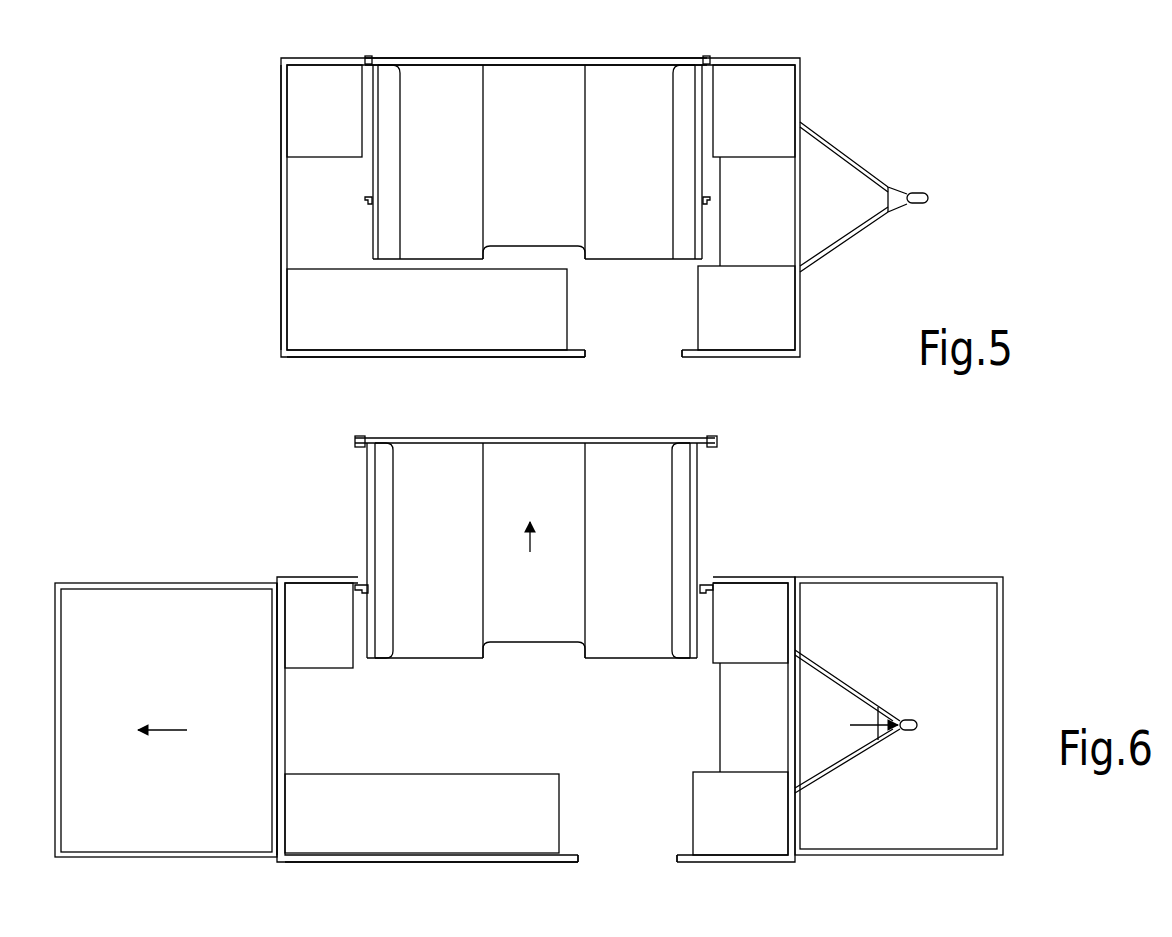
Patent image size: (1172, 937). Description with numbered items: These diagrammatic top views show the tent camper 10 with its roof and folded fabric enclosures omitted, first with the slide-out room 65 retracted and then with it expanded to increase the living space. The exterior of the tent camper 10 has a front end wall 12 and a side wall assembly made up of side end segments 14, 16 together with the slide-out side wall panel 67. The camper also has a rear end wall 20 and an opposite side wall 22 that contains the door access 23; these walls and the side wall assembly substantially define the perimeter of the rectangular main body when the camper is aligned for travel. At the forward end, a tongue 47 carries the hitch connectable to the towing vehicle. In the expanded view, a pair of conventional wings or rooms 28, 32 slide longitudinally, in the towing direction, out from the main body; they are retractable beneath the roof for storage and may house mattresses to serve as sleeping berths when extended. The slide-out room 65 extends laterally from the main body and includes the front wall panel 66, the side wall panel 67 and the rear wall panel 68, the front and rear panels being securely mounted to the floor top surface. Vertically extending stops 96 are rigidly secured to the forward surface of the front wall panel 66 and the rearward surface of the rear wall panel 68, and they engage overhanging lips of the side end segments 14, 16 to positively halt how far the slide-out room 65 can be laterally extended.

In FIG. 5, the tent camper 10 is at (852, 105).
In FIG. 6, the tent camper 10 is at (815, 535).
In FIG. 5, the front end wall 12 is at (800, 290).
In FIG. 6, the front end wall 12 is at (797, 612).
In FIG. 5, the side end segment 14 is at (752, 58).
In FIG. 6, the side end segment 14 is at (738, 577).
In FIG. 5, the side end segment 16 is at (335, 58).
In FIG. 6, the side end segment 16 is at (330, 577).
In FIG. 5, the rear end wall 20 is at (281, 180).
In FIG. 6, the rear end wall 20 is at (277, 642).
In FIG. 5, the opposite side wall 22 is at (450, 357).
In FIG. 6, the opposite side wall 22 is at (505, 860).
In FIG. 5, the door access 23 is at (657, 345).
In FIG. 6, the door access 23 is at (628, 858).
In FIG. 6, the wing or room 28 is at (145, 583).
In FIG. 6, the wing or room 32 is at (920, 577).
In FIG. 5, the tongue 47 is at (873, 165).
In FIG. 6, the tongue 47 is at (853, 688).
In FIG. 5, the slide-out room 65 is at (537, 136).
In FIG. 6, the slide-out room 65 is at (540, 513).
In FIG. 6, the front wall panel 66 is at (700, 500).
In FIG. 5, the slide-out side wall panel 67 is at (565, 58).
In FIG. 6, the slide-out side wall panel 67 is at (625, 438).
In FIG. 6, the rear wall panel 68 is at (370, 480).
In FIG. 5, the stop 96 is at (370, 200).
In FIG. 6, the stop 96 is at (355, 592).